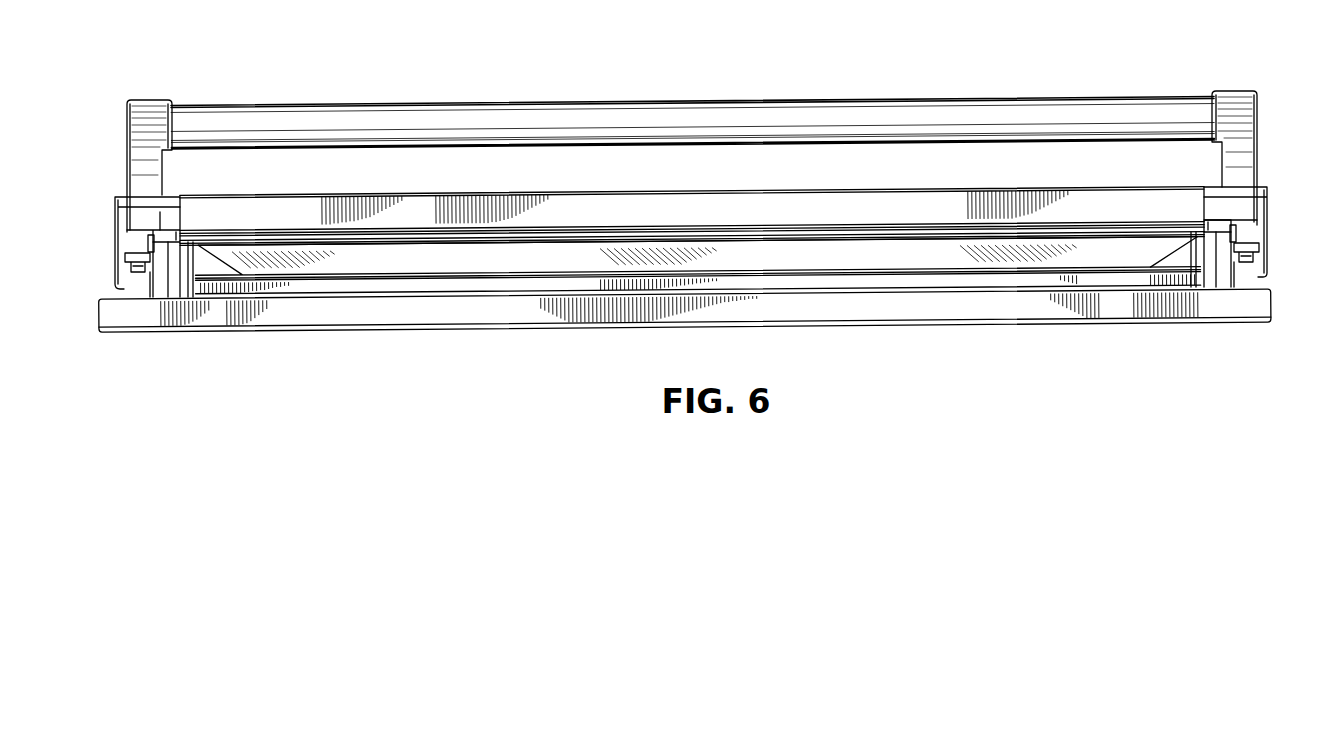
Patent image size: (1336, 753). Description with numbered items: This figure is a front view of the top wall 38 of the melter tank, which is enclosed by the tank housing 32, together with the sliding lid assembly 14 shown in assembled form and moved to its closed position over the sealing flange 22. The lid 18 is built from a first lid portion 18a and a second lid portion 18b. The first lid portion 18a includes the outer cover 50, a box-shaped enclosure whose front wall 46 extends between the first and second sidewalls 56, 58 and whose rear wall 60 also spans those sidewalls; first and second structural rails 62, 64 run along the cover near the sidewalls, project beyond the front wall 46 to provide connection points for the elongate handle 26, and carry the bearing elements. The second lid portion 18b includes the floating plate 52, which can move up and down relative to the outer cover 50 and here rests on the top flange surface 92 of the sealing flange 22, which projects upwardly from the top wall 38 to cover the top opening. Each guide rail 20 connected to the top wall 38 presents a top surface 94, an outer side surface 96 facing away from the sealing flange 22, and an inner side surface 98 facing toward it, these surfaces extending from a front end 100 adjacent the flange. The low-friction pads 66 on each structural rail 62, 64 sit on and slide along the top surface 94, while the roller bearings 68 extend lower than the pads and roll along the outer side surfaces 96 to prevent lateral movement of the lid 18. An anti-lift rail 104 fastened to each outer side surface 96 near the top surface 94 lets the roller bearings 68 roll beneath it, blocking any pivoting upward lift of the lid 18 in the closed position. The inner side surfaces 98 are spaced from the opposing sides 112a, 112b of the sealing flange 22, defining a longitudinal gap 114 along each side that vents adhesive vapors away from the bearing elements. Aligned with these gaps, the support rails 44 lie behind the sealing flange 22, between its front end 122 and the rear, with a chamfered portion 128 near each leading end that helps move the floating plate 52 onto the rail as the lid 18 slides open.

The sliding lid assembly 14 is at (146, 90).
The lid 18 is at (115, 192).
The first lid portion 18a is at (315, 202).
The second lid portion 18b is at (796, 226).
The guide rails 20 is at (167, 300).
The sealing flange 22 is at (451, 272).
The handle 26 is at (491, 102).
The tank housing 32 is at (850, 312).
The top wall 38 is at (922, 283).
The support rails 44 is at (188, 292).
The front wall 46 is at (570, 210).
The outer cover 50 is at (461, 193).
The floating plate 52 is at (624, 235).
The first sidewall 56 is at (113, 210).
The second sidewall 58 is at (1272, 197).
The rear wall 60 is at (152, 275).
The first structural rail 62 is at (157, 230).
The second structural rail 64 is at (1218, 212).
The low-friction pads 66 is at (170, 228).
The roller bearings 68 is at (125, 256).
The top flange surface 92 is at (403, 238).
The top surface 94 is at (162, 233).
The outer side surface 96 is at (162, 296).
The inner side surface 98 is at (183, 294).
The front end 100 is at (168, 278).
The anti-lift rail 104 is at (152, 245).
The first side of the sealing flange 112a is at (227, 266).
The second side of the sealing flange 112b is at (1157, 262).
The longitudinal gap 114 is at (212, 266).
The front end of the sealing flange 122 is at (512, 263).
The chamfered portion 128 is at (178, 238).